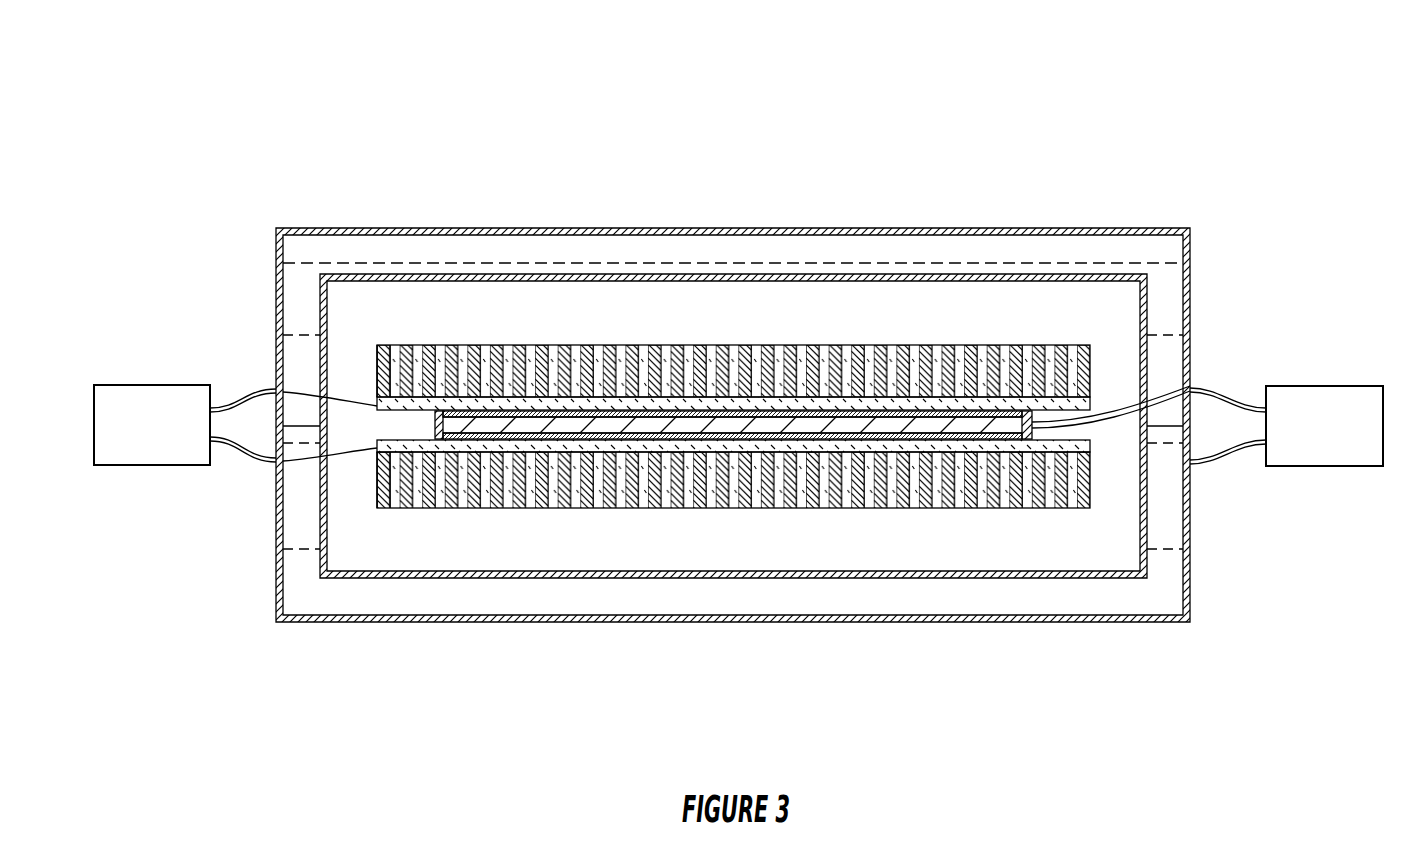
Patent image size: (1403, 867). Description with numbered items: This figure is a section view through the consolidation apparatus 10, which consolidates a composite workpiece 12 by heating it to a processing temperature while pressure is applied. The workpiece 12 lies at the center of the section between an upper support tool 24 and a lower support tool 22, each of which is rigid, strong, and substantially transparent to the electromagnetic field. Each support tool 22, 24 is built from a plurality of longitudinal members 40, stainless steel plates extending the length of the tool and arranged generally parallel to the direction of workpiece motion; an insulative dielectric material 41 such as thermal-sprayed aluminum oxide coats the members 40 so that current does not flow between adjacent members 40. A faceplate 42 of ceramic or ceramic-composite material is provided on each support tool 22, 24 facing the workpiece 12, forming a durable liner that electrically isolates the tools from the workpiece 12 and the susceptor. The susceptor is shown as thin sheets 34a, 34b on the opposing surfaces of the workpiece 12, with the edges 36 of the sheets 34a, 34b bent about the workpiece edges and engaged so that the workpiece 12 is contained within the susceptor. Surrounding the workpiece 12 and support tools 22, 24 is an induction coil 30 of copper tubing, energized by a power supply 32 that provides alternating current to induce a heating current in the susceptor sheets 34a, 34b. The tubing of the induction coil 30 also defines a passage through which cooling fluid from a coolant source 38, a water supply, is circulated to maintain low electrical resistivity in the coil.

The consolidation apparatus 10 is at (242, 160).
The composite workpiece 12 is at (377, 407).
The support tool 22 is at (1092, 501).
The support tool 24 is at (1092, 365).
The induction coil 30 is at (1150, 622).
The power supply 32 is at (118, 385).
The susceptor sheet 34a is at (910, 442).
The susceptor sheet 34b is at (960, 408).
The edges of the sheets 36 is at (436, 431).
The coolant source 38 is at (1318, 386).
The member 40 is at (430, 345).
The dielectric material 41 is at (478, 345).
The faceplate 42 is at (377, 396).